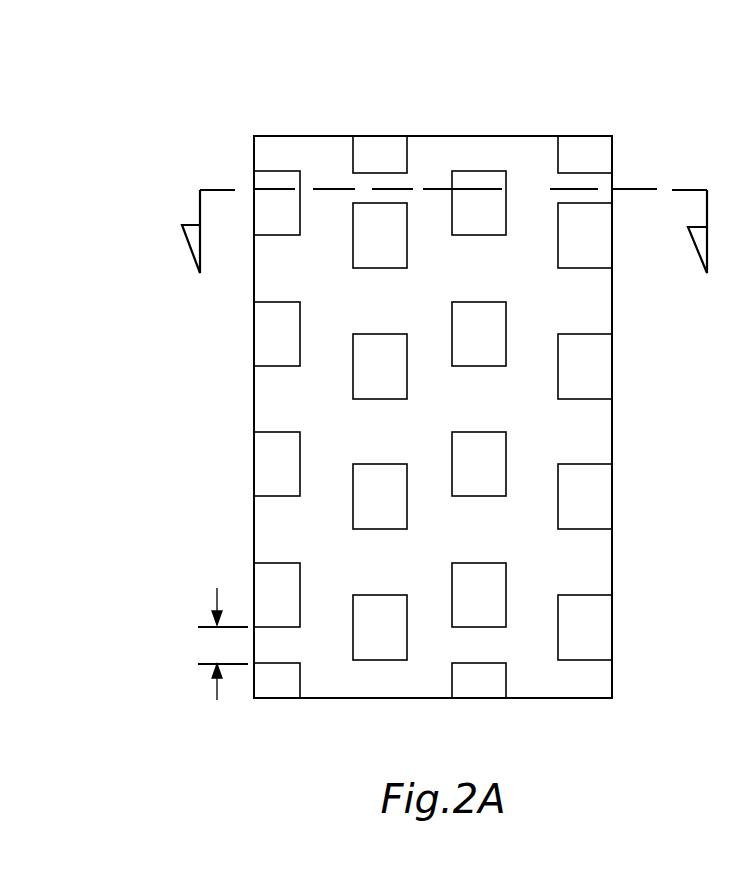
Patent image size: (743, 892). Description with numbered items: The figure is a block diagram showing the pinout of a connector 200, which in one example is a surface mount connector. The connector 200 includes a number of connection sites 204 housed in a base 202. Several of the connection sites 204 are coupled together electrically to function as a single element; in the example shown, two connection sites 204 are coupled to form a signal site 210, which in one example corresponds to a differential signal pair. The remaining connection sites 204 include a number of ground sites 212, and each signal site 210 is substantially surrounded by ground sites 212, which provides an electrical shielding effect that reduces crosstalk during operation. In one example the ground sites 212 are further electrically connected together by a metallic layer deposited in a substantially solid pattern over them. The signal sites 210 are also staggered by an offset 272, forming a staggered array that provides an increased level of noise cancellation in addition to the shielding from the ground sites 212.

The connector 200 is at (238, 95).
The base 202 is at (263, 513).
The connection sites 204 is at (268, 383).
The signal site 210 is at (493, 332).
The ground sites 212 is at (538, 285).
The offset 272 is at (217, 588).